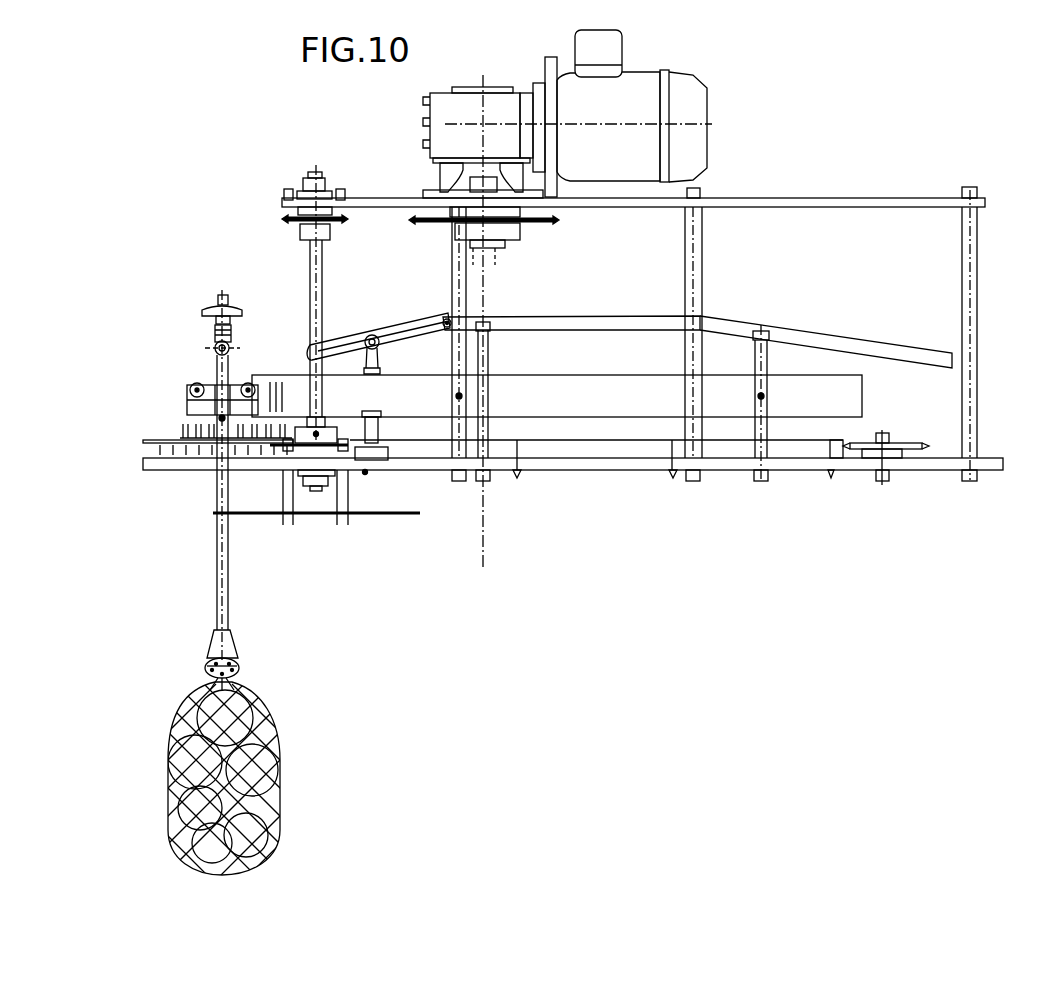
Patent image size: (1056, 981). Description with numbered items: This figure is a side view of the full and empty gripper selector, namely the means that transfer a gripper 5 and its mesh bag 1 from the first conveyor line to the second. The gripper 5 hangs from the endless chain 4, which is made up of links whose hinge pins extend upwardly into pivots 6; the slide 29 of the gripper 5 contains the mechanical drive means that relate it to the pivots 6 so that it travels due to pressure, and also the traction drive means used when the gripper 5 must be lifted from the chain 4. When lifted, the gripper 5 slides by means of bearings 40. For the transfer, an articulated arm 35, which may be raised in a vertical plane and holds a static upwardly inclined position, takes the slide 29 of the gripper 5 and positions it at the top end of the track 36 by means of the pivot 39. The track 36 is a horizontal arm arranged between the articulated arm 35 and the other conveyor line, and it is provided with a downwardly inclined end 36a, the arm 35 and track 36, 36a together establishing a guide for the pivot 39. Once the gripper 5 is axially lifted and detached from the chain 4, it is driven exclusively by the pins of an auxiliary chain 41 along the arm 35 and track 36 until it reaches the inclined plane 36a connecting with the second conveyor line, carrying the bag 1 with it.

The mesh bag 1 is at (205, 752).
The endless chain 4 is at (175, 445).
The gripper 5 is at (215, 553).
The pivot 6 is at (195, 423).
The slide 29 is at (232, 395).
The articulated arm 35 is at (410, 328).
The inclined track 36 is at (610, 322).
The downwardly inclined end 36a is at (826, 335).
The pivot 39 is at (218, 343).
The bearings 40 is at (197, 387).
The auxiliary chain 41 is at (915, 448).